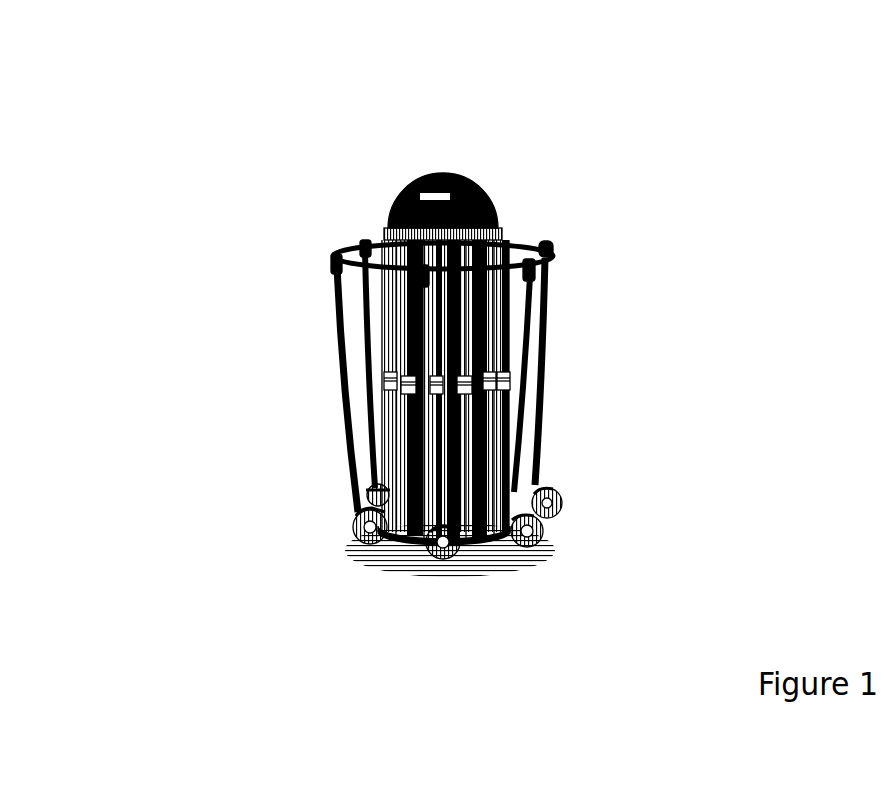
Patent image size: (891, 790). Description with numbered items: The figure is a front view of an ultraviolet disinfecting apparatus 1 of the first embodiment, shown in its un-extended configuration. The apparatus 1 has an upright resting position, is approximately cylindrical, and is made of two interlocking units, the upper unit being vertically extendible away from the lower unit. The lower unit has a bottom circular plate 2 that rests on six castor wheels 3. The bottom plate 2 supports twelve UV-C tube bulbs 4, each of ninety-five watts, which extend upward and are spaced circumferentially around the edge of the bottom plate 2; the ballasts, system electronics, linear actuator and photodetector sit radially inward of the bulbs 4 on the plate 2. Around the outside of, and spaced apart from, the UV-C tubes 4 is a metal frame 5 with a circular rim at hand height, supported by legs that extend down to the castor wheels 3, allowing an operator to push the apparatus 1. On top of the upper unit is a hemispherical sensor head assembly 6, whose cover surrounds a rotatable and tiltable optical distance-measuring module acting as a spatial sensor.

The ultraviolet disinfecting apparatus 1 is at (277, 455).
The bottom circular plate 2 is at (470, 542).
The castor wheels 3 is at (543, 530).
The UV-C tube bulbs 4 is at (392, 323).
The metal frame 5 is at (557, 260).
The hemispherical sensor head assembly 6 is at (487, 193).